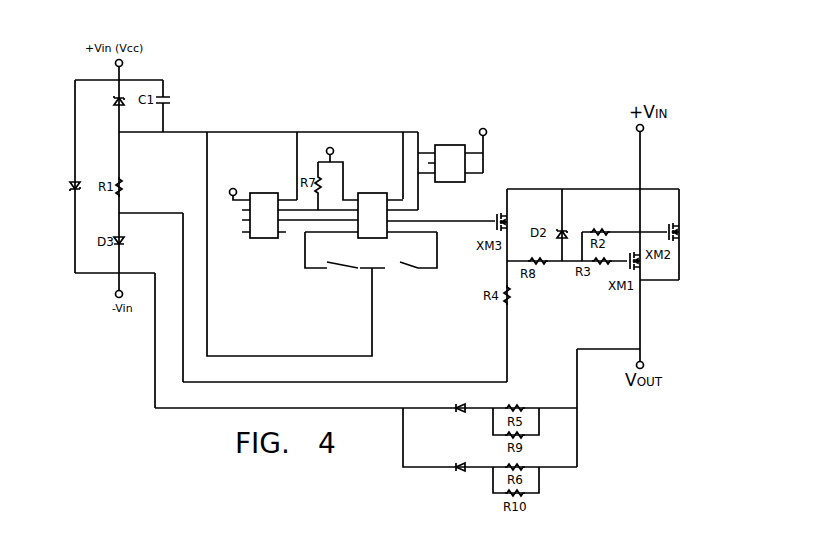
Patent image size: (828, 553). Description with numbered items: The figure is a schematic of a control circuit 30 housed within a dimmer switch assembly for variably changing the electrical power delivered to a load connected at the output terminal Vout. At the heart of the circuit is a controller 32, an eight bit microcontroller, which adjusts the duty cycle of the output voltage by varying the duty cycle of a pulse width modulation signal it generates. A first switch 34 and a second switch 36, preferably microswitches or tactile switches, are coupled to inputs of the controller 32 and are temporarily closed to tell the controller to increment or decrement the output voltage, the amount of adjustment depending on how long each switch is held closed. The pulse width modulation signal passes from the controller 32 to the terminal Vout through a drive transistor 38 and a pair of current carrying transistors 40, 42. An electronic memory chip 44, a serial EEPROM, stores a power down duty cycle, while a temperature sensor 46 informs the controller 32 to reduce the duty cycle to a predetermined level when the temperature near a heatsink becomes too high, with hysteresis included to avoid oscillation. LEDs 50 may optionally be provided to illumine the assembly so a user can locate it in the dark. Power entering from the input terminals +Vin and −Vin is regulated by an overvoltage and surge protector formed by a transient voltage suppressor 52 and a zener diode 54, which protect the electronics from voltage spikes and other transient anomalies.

The control circuit 30 is at (369, 72).
The controller 32 is at (360, 193).
The first switch 34 is at (332, 293).
The second switch 36 is at (395, 291).
The drive transistor 38 is at (495, 213).
The current carrying transistor 40 is at (680, 232).
The current carrying transistor 42 is at (626, 268).
The electronic memory chip 44 is at (262, 240).
The temperature sensor 46 is at (437, 145).
The LED 50 is at (452, 467).
The transient voltage suppressor 52 is at (70, 180).
The zener diode 54 is at (116, 106).